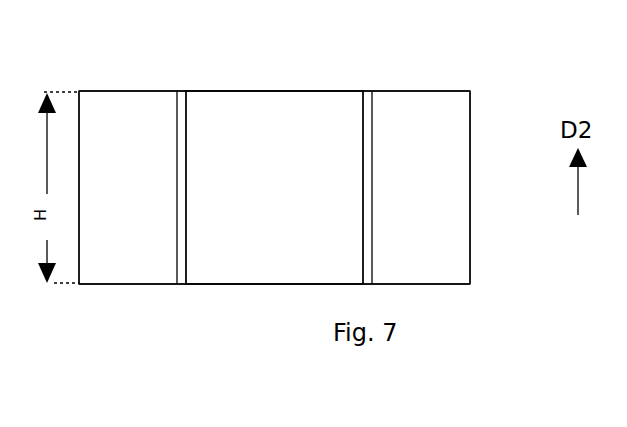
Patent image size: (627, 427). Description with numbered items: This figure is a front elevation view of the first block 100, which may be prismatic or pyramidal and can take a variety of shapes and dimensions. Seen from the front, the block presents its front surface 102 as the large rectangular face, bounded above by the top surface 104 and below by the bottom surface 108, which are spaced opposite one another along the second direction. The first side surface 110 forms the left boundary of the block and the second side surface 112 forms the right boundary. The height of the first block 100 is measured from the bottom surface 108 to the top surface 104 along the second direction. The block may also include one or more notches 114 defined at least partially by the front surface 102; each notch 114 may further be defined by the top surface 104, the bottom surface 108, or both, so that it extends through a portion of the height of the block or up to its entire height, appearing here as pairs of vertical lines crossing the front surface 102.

The first block 100 is at (485, 158).
The front surface 102 is at (222, 255).
The top surface 104 is at (231, 90).
The bottom surface 108 is at (297, 284).
The first side surface 110 is at (81, 204).
The second side surface 112 is at (470, 241).
The notch 114 is at (366, 100).